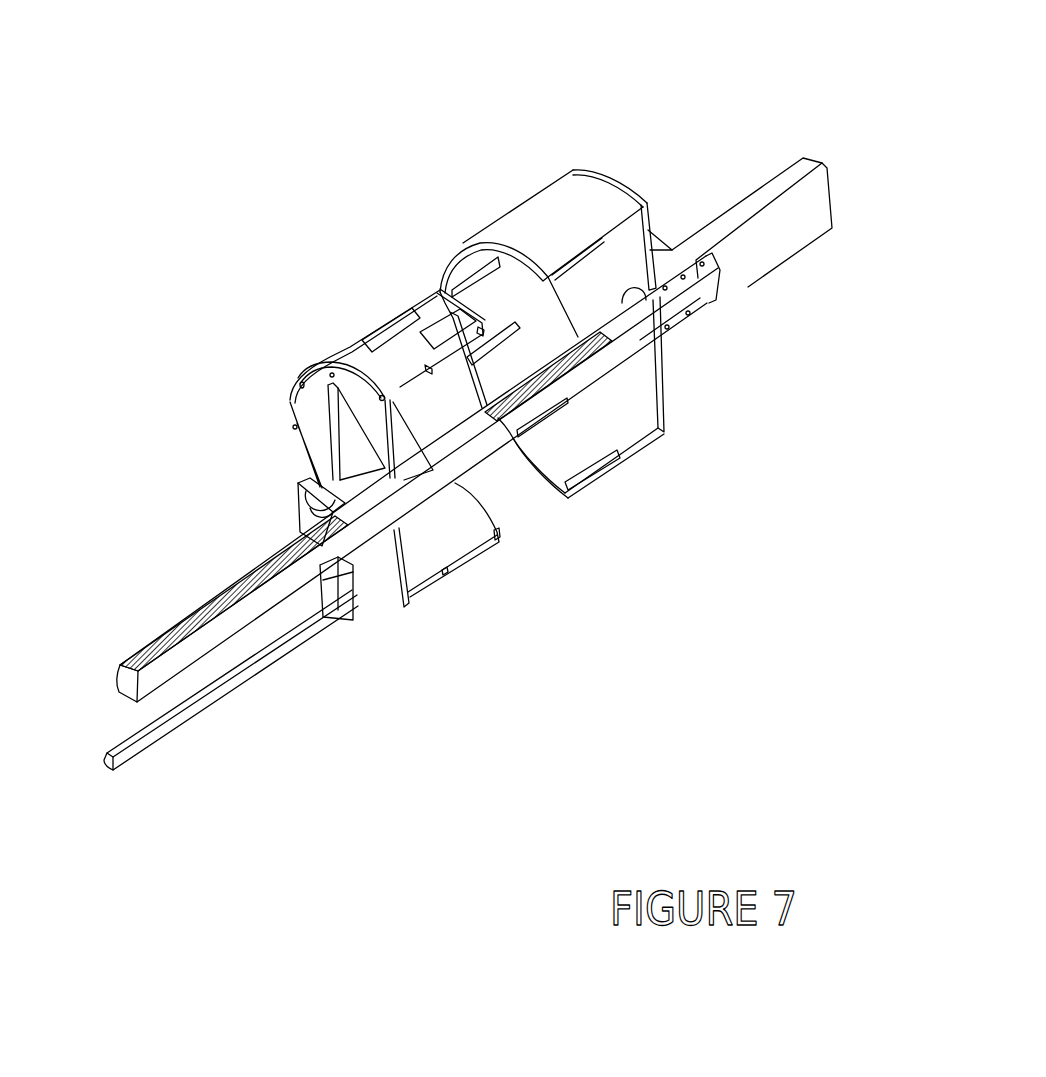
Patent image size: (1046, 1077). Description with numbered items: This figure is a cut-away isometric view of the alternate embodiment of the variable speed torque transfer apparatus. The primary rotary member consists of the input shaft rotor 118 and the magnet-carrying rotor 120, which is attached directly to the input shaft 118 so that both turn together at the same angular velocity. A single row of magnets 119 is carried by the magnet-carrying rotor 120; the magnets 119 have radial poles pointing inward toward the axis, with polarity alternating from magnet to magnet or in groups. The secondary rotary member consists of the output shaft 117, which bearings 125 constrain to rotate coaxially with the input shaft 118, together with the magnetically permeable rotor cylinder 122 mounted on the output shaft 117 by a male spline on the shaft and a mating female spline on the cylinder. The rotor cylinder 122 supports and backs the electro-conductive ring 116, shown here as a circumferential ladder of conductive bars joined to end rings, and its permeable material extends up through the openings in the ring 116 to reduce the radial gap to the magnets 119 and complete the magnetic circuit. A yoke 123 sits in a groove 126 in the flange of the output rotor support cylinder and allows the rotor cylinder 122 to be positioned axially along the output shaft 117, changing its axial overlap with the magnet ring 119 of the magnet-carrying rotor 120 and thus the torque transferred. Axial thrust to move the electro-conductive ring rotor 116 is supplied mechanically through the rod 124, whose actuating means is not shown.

The electro-conductive ring 116 is at (434, 291).
The output shaft 117 is at (182, 604).
The input shaft rotor 118 is at (766, 188).
The magnets 119 is at (505, 340).
The magnet-carrying rotor 120 is at (613, 423).
The rotor cylinder 122 is at (348, 356).
The yoke 123 is at (288, 481).
The rod 124 is at (246, 690).
The bearings 125 is at (705, 312).
The groove 126 is at (327, 483).